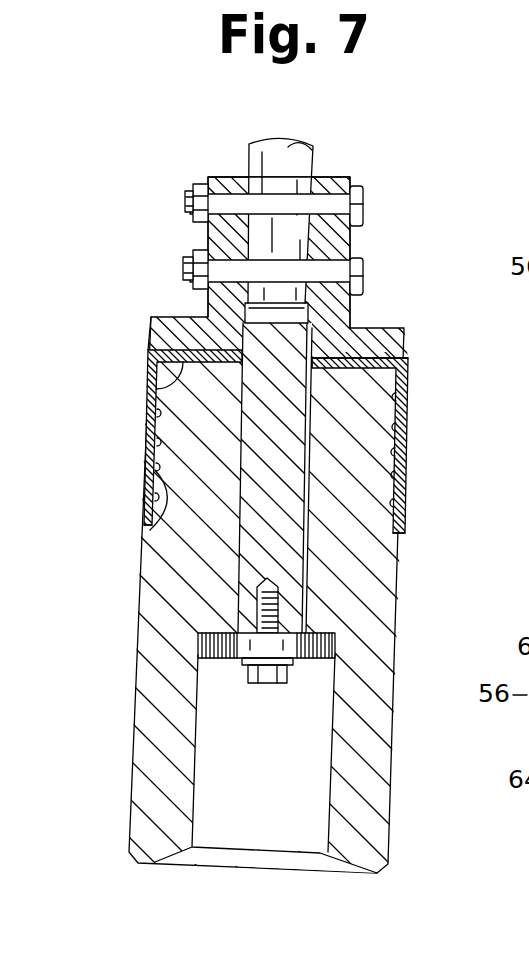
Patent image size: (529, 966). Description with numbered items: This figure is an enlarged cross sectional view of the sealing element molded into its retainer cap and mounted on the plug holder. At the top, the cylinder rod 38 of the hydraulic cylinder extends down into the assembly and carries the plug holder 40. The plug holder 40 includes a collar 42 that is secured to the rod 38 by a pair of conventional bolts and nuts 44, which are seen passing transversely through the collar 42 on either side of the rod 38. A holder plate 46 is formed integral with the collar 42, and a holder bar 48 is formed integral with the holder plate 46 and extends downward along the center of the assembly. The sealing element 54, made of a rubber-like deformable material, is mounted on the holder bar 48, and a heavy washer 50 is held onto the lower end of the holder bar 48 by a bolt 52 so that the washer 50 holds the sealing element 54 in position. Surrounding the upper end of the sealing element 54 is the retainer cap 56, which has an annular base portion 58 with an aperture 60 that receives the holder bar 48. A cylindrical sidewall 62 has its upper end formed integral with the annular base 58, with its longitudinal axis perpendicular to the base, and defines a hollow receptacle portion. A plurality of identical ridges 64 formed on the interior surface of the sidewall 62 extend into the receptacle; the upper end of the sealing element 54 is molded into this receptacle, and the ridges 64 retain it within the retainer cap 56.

The cylinder rod 38 is at (288, 165).
The plug holder 40 is at (152, 224).
The collar 42 is at (325, 242).
The bolts and nuts 44 is at (203, 263).
The holder plate 46 is at (187, 332).
The holder bar 48 is at (282, 556).
The heavy washer 50 is at (240, 633).
The bolt 52 is at (268, 675).
The sealing element 54 is at (190, 557).
The retainer cap 56 is at (428, 436).
The annular base portion 58 is at (152, 383).
The aperture 60 is at (311, 362).
The cylindrical sidewall 62 is at (147, 428).
The ridges 64 is at (145, 537).